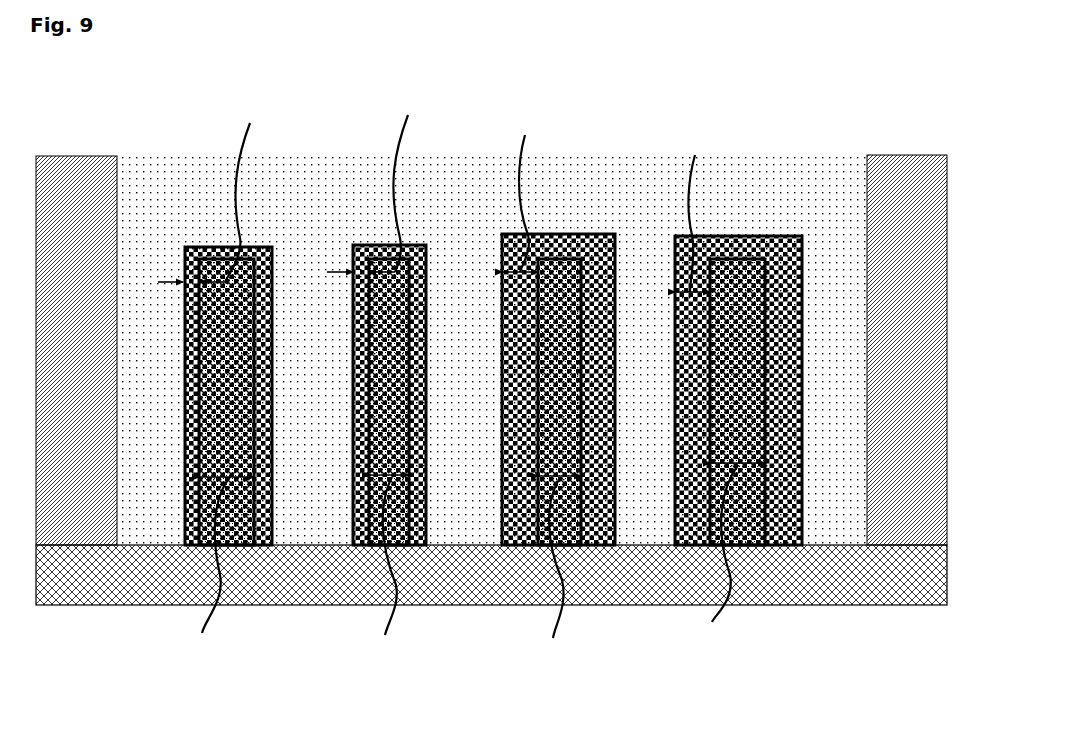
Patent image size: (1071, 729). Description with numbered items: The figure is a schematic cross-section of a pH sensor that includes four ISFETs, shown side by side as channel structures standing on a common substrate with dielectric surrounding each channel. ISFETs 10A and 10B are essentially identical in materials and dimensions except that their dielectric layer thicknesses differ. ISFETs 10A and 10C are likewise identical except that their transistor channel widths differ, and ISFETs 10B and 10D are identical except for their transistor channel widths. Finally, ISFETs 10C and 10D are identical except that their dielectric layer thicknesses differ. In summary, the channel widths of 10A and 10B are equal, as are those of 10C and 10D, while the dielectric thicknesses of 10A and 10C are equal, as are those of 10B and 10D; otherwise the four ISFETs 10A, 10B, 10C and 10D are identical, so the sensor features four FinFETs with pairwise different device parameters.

The ISFET 10A is at (370, 217).
The ISFET 10B is at (565, 215).
The ISFET 10C is at (222, 226).
The ISFET 10D is at (730, 215).